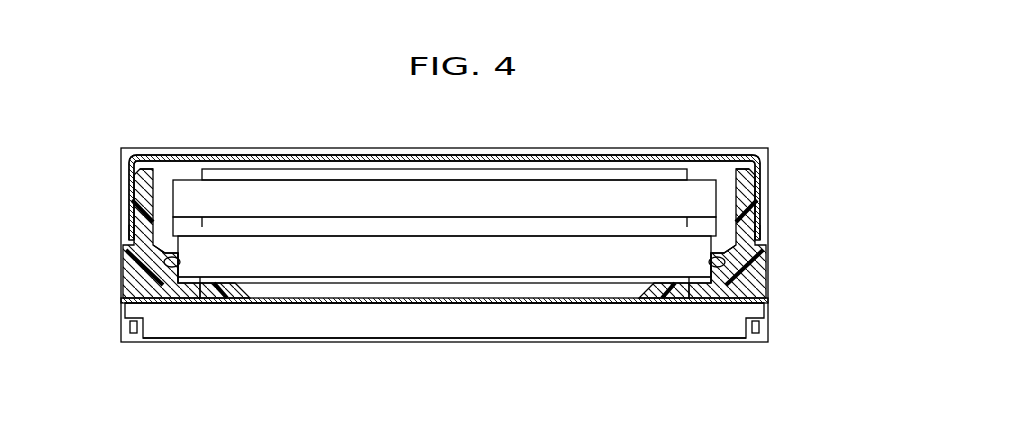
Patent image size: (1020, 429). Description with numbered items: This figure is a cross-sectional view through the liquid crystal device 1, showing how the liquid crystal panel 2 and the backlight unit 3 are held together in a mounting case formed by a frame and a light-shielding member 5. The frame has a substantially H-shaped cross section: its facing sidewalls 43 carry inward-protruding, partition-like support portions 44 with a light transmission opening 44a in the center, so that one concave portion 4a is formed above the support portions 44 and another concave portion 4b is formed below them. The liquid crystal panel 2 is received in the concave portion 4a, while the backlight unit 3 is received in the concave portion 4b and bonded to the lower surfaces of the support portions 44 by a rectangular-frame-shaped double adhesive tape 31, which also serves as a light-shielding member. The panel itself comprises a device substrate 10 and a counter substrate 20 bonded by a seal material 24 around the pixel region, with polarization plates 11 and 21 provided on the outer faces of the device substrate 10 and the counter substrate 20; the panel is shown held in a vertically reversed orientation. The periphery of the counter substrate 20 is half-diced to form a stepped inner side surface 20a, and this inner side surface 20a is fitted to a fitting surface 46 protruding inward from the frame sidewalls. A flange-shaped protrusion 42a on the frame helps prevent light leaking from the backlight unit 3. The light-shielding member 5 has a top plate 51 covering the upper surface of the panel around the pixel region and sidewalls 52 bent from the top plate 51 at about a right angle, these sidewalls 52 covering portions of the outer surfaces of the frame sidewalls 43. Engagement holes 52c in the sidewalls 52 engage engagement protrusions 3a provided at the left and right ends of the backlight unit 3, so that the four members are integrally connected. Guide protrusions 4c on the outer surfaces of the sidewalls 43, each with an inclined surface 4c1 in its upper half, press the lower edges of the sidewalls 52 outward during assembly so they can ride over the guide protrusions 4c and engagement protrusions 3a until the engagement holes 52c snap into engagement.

The liquid crystal device 1 is at (204, 117).
The liquid crystal panel 2 is at (268, 168).
The backlight unit 3 is at (572, 320).
The engagement protrusion 3a is at (125, 312).
The concave portion 4a is at (158, 150).
The concave portion 4b is at (768, 345).
The guide protrusion 4c is at (122, 285).
The inclined surface 4c1 is at (125, 258).
The light-shielding member 5 is at (730, 145).
The device substrate 10 is at (330, 190).
The polarization plate 11 is at (462, 185).
The counter substrate 20 is at (425, 260).
The inner side surface 20a is at (183, 262).
The polarization plate 21 is at (500, 284).
The seal material 24 is at (398, 224).
The double adhesive tape 31 is at (205, 315).
The protrusion 42a is at (112, 148).
The sidewall 43 is at (138, 230).
The support portion 44 is at (230, 300).
The light transmission opening 44a is at (322, 306).
The fitting surface 46 is at (165, 305).
The top plate 51 is at (683, 170).
The sidewall 52 is at (128, 188).
The engagement hole 52c is at (128, 215).